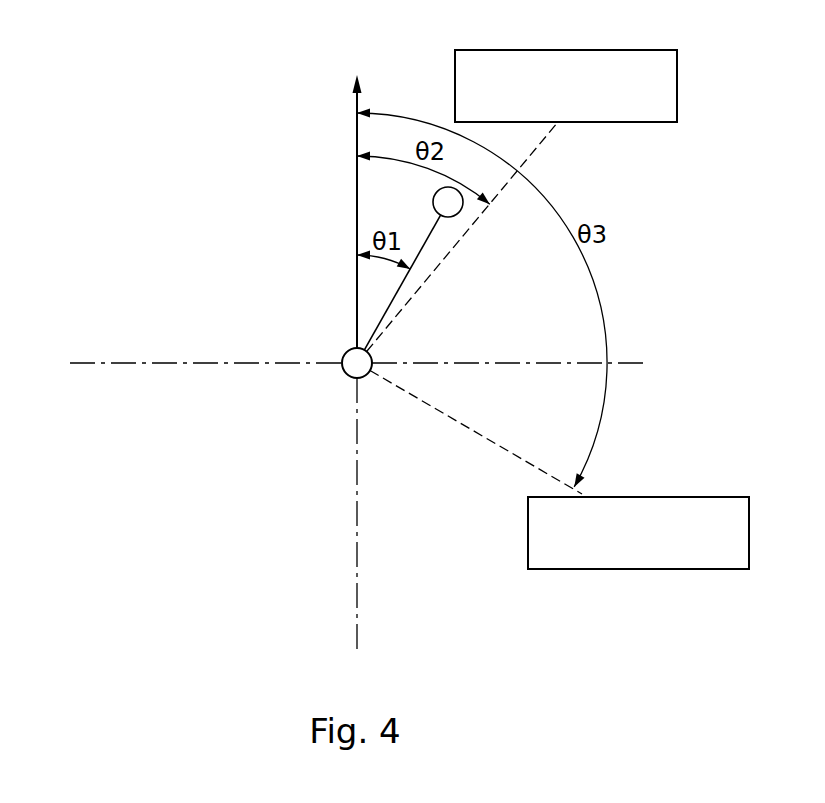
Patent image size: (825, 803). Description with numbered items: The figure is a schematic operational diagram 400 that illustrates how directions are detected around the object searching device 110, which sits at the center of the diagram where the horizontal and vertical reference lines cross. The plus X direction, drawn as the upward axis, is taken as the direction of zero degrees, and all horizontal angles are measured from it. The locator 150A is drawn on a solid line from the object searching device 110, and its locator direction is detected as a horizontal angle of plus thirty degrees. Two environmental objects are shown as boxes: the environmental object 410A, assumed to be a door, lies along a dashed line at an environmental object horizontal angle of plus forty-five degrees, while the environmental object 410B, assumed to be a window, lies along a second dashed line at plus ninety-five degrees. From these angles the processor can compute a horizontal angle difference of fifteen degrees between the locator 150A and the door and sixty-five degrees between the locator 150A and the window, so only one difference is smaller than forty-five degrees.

The operational diagram 400 is at (88, 41).
The object searching device 110 is at (348, 376).
The locator 150A is at (433, 200).
The environmental object 410A is at (677, 90).
The environmental object 410B is at (569, 569).